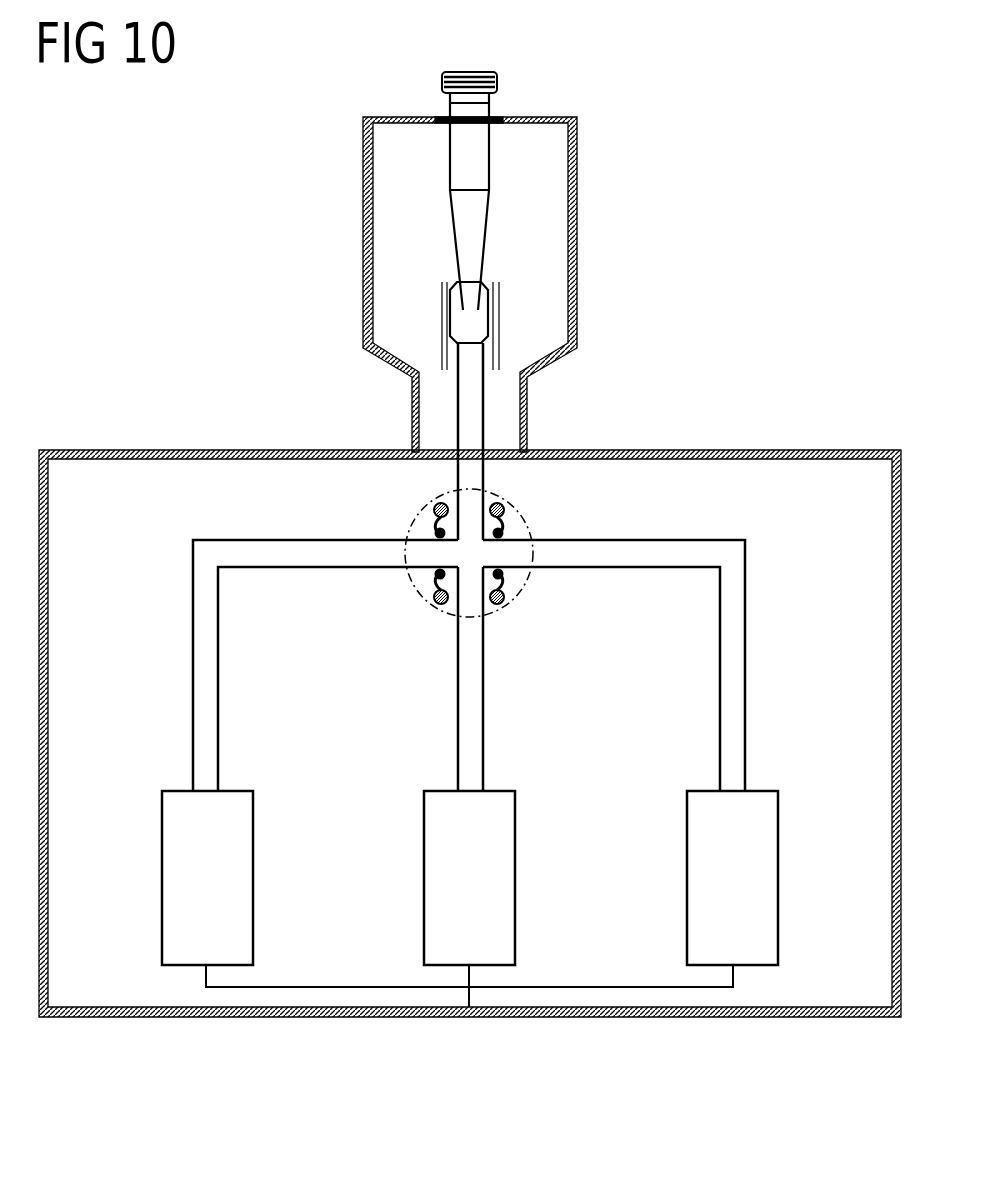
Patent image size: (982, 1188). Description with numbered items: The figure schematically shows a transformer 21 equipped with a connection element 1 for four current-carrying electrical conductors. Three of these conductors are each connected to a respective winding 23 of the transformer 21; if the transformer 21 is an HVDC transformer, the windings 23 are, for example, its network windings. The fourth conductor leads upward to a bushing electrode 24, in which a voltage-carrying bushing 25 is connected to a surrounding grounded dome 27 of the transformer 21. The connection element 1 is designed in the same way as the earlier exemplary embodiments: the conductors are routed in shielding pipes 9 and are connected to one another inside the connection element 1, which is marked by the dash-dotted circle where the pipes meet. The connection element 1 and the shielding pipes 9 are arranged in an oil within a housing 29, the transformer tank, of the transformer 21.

The connection element 1 is at (515, 508).
The shielding pipes 9 is at (456, 477).
The transformer 21 is at (168, 253).
The winding 23 is at (253, 875).
The bushing electrode 24 is at (457, 305).
The voltage-carrying bushing 25 is at (453, 225).
The grounded dome 27 is at (363, 323).
The housing 29 is at (104, 450).